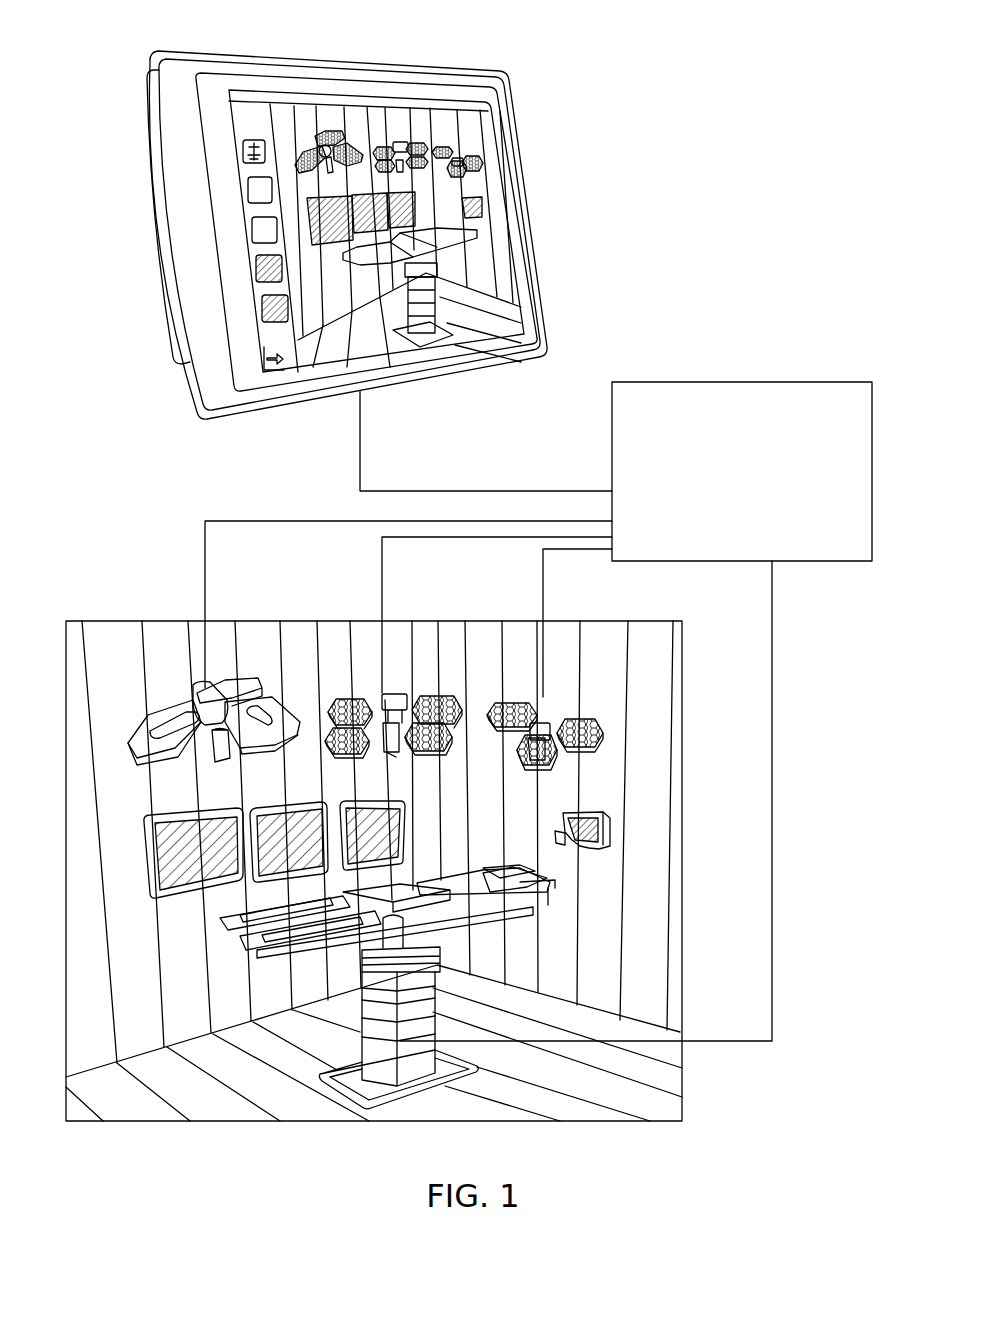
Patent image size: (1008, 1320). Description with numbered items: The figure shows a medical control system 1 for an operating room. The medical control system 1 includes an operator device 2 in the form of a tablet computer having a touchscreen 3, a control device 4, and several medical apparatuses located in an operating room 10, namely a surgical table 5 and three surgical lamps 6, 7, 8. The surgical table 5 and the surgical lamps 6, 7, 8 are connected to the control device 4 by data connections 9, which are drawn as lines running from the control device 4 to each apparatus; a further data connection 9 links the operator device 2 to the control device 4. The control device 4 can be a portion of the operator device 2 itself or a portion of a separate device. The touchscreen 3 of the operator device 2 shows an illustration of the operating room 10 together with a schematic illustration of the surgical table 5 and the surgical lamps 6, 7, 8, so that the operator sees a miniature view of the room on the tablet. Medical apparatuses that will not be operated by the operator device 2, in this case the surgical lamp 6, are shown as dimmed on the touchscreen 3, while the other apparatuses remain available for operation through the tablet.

The medical control system 1 is at (745, 52).
The operator device 2 is at (333, 72).
The touchscreen 3 is at (481, 150).
The control device 4 is at (782, 392).
The surgical table 5 is at (415, 1058).
The surgical lamp 6 is at (200, 688).
The surgical lamp 7 is at (353, 692).
The surgical lamp 8 is at (517, 692).
The data connections 9 is at (437, 491).
The operating room 10 is at (680, 848).